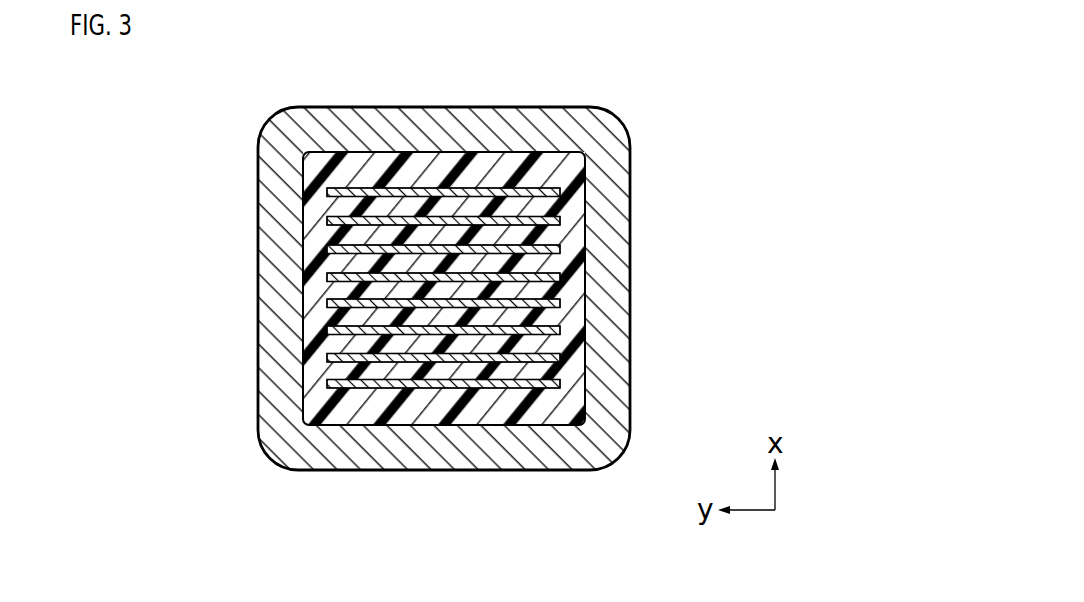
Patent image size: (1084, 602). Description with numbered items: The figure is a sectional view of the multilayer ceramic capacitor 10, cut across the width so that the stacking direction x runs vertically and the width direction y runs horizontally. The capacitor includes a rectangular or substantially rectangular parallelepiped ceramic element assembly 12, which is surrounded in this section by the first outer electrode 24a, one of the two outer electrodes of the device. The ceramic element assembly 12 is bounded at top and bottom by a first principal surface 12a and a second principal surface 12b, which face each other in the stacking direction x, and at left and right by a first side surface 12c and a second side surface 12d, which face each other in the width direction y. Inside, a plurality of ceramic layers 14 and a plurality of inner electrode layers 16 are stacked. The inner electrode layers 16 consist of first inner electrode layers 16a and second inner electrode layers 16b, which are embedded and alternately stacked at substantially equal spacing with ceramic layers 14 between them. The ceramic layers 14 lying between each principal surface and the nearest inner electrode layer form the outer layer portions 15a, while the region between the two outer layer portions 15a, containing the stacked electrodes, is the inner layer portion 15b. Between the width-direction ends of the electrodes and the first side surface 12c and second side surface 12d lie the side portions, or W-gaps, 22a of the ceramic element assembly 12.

The multilayer ceramic capacitor 10 is at (190, 113).
The ceramic element assembly 12 is at (380, 292).
The first principal surface 12a is at (360, 150).
The second principal surface 12b is at (365, 426).
The first side surface 12c is at (303, 277).
The second side surface 12d is at (594, 300).
The ceramic layer 14 is at (444, 292).
The outer layer portion 15a is at (420, 175).
The inner layer portion 15b is at (498, 263).
The inner electrode layer 16 is at (380, 357).
The first inner electrode layer 16a is at (333, 250).
The second inner electrode layer 16b is at (558, 278).
The side portion (W-gap) 22a is at (327, 395).
The first outer electrode 24a is at (320, 122).